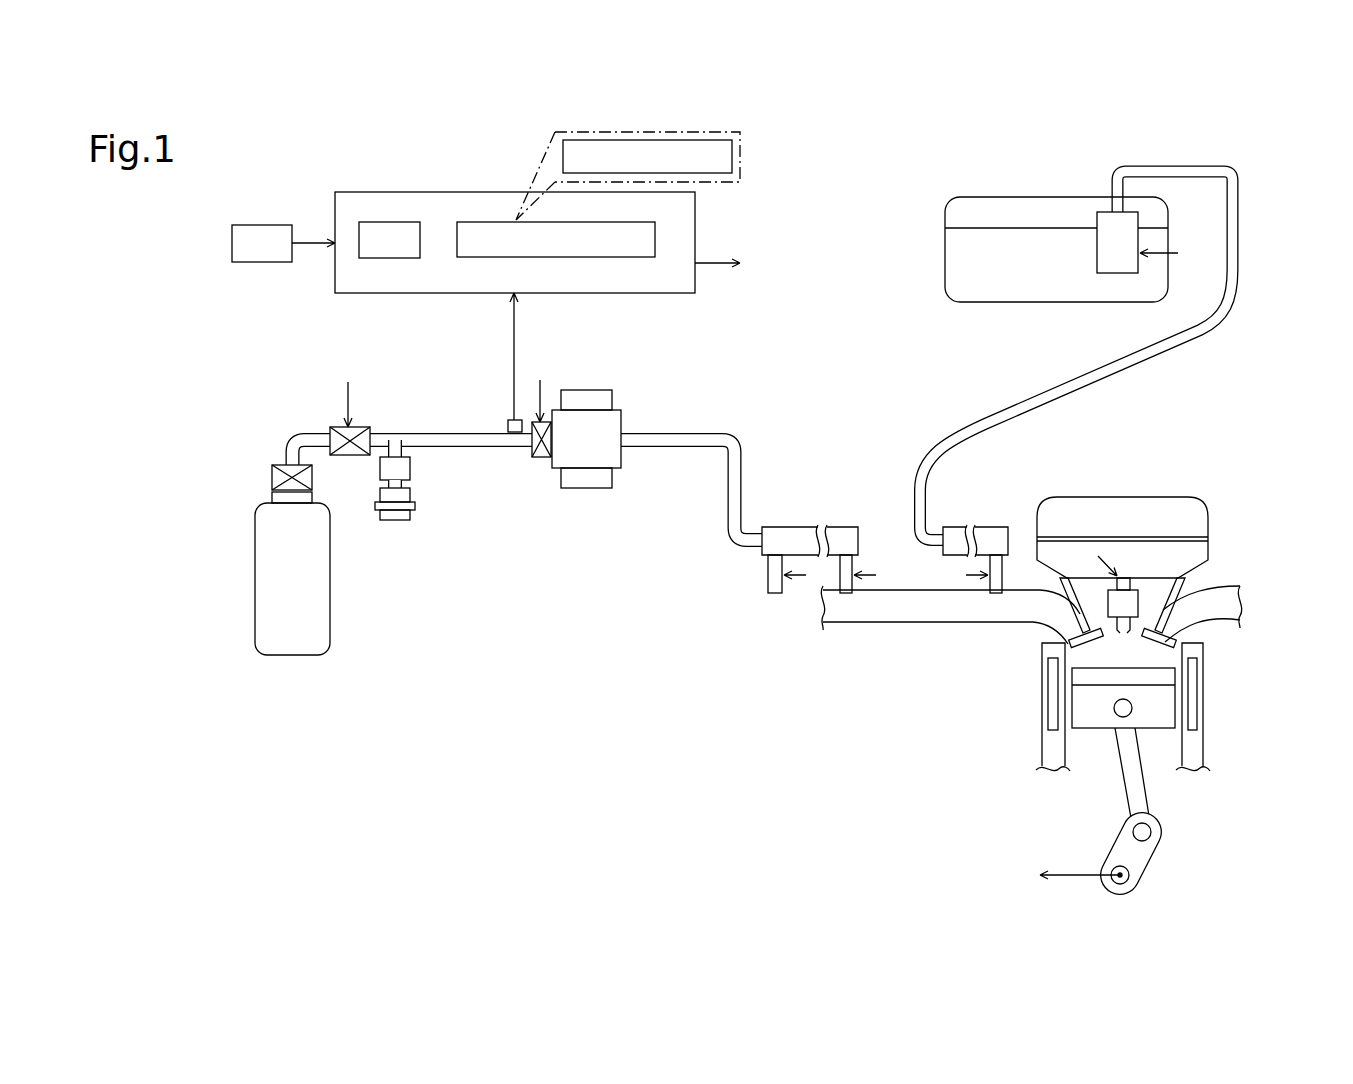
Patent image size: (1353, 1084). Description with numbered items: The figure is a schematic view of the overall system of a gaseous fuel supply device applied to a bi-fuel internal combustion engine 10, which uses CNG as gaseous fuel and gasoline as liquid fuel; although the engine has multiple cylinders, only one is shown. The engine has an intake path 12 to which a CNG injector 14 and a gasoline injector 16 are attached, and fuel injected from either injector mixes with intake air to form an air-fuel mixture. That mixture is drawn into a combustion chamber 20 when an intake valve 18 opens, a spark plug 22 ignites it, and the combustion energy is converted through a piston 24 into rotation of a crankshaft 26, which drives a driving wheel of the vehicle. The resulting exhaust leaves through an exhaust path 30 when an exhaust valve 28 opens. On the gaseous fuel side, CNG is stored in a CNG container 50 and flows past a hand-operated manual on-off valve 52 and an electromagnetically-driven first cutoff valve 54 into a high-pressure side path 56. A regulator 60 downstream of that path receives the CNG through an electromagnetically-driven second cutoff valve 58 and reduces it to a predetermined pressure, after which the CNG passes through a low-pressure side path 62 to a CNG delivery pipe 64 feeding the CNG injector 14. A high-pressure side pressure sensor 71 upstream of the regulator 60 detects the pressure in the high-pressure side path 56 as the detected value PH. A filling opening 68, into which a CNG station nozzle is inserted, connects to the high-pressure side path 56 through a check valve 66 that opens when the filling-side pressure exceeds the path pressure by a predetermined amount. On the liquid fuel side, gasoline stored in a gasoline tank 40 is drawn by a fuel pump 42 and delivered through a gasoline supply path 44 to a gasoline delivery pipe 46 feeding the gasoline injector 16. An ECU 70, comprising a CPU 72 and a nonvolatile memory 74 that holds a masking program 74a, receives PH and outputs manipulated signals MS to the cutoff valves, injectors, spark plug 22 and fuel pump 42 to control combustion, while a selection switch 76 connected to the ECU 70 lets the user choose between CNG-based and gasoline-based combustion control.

The internal combustion engine 10 is at (1254, 546).
The intake path 12 is at (930, 622).
The CNG injector 14 is at (768, 576).
The gasoline injector 16 is at (1003, 572).
The intake valve 18 is at (1058, 594).
The combustion chamber 20 is at (1164, 662).
The spark plug 22 is at (1133, 590).
The piston 24 is at (1165, 706).
The crankshaft 26 is at (1128, 882).
The exhaust valve 28 is at (1185, 585).
The exhaust path 30 is at (1212, 613).
The gasoline tank 40 is at (995, 197).
The fuel pump 42 is at (1096, 218).
The gasoline supply path 44 is at (1239, 217).
The gasoline delivery pipe 46 is at (990, 527).
The CNG container 50 is at (255, 558).
The manual on-off valve 52 is at (271, 478).
The first cutoff valve 54 is at (351, 456).
The high-pressure side path 56 is at (426, 433).
The second cutoff valve 58 is at (541, 457).
The regulator 60 is at (621, 458).
The low-pressure side path 62 is at (700, 433).
The CNG delivery pipe 64 is at (840, 527).
The check valve 66 is at (410, 468).
The filling opening 68 is at (415, 507).
The ECU 70 is at (695, 213).
The high-pressure side pressure sensor 71 is at (507, 420).
The CPU 72 is at (393, 222).
The nonvolatile memory 74 is at (553, 222).
The masking program 74a is at (732, 156).
The selection switch 76 is at (255, 225).